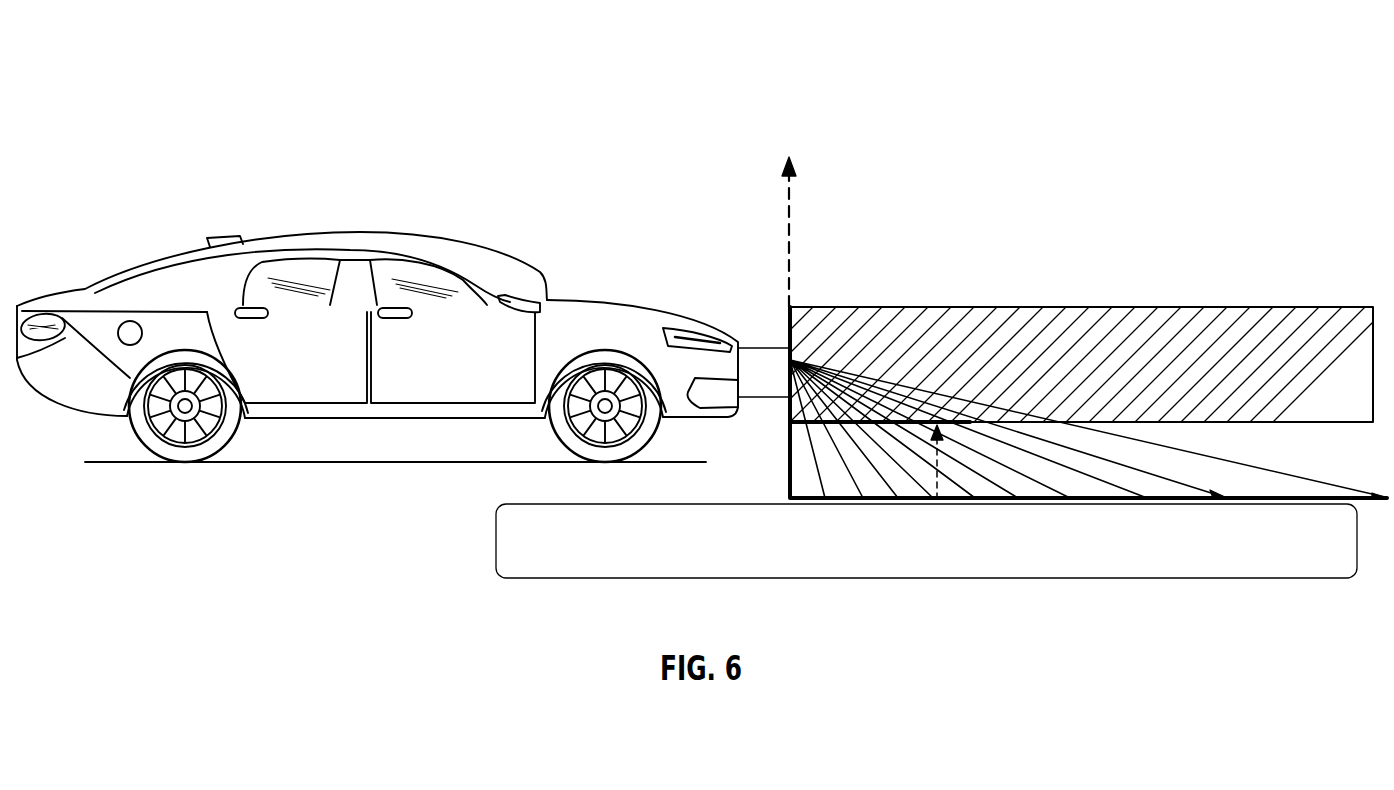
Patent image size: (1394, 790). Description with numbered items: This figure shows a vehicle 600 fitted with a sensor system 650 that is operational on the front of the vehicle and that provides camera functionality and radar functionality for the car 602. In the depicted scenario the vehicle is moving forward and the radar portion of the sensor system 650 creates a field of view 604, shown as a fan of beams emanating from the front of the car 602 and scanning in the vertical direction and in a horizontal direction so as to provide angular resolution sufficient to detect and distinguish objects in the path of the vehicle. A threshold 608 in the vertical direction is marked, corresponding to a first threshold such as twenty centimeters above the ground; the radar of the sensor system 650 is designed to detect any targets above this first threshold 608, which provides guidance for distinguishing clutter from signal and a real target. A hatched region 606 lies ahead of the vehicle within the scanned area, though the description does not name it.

The vehicle 600 is at (178, 104).
The car 602 is at (622, 298).
The sensor system 650 is at (767, 348).
The obstacle / wall 606 is at (995, 338).
The field of view 604 is at (1247, 463).
The threshold 608 is at (916, 425).